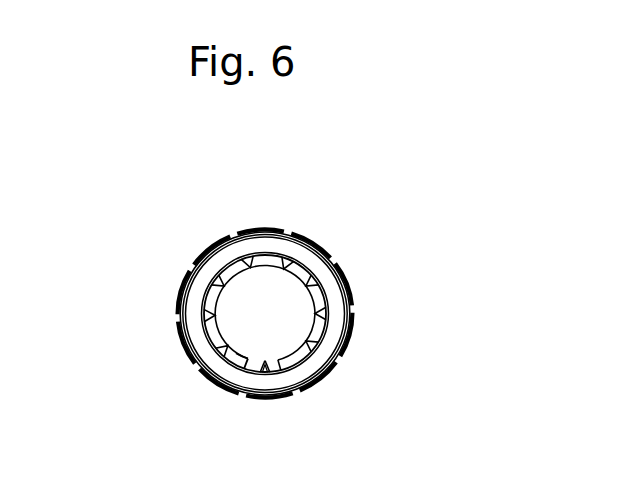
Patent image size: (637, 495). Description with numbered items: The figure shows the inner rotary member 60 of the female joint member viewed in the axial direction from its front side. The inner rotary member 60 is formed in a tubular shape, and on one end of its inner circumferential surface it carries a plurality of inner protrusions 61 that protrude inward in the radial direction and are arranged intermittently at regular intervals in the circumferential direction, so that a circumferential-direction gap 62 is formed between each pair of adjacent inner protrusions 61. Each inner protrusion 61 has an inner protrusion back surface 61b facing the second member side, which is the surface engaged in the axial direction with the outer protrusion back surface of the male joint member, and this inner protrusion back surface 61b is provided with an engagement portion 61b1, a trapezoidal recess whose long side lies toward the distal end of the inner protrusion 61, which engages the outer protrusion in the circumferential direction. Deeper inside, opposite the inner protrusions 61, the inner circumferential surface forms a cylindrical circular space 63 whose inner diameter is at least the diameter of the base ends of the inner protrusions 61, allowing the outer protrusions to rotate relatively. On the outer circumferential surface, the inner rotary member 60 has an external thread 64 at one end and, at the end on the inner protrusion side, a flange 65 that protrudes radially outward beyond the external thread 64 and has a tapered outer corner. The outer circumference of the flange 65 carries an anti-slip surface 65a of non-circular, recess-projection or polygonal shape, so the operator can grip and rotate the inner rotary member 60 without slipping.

The inner rotary member 60 is at (366, 242).
The inner protrusion 61 is at (296, 352).
The inner protrusion back surface 61b is at (248, 367).
The engagement portion 61b1 is at (236, 362).
The circumferential-direction gap 62 is at (272, 366).
The circular space 63 is at (218, 343).
The external thread 64 is at (195, 284).
The flange 65 is at (243, 229).
The anti-slip surface 65a is at (195, 263).